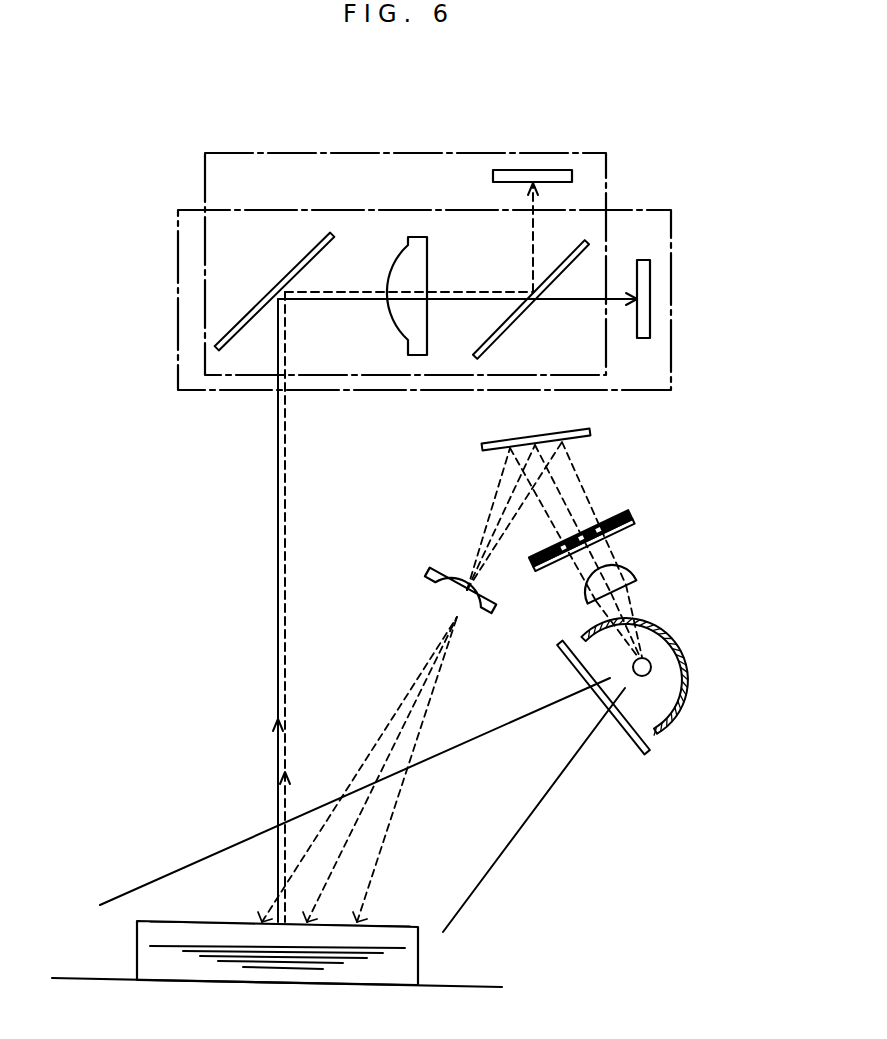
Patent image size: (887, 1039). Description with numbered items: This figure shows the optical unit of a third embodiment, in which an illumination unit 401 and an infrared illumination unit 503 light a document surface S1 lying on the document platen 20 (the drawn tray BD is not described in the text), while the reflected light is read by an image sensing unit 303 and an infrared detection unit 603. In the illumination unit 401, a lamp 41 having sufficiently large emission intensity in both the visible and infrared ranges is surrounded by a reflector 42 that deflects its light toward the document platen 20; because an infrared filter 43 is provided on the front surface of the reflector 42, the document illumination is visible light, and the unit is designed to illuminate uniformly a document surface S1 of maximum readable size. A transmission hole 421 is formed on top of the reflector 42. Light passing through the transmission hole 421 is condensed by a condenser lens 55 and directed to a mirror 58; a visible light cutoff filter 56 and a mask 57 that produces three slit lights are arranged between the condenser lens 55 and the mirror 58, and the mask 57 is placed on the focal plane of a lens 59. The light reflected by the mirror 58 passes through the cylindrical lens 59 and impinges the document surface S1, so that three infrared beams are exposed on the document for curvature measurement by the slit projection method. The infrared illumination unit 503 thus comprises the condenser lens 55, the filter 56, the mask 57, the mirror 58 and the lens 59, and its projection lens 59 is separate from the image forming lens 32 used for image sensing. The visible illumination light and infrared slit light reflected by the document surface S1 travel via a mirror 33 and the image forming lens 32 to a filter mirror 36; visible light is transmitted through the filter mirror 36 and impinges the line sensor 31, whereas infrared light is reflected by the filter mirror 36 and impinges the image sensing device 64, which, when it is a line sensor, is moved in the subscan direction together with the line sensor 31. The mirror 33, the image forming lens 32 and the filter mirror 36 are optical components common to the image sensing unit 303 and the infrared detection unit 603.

The infrared detection unit 603 is at (243, 153).
The image sensing unit 303 is at (657, 210).
The mirror 33 is at (305, 245).
The image forming lens 32 is at (418, 238).
The image sensing device 64 is at (512, 170).
The filter mirror 36 is at (492, 352).
The line sensor 31 is at (651, 318).
The infrared illumination unit 503 is at (456, 522).
The mirror 58 is at (592, 433).
The mask 57 is at (623, 516).
The visible light cutoff filter 56 is at (638, 524).
The condenser lens 55 is at (634, 573).
The lens 59 is at (428, 575).
The illumination unit 401 is at (681, 740).
The reflector 42 is at (683, 700).
The transmission hole 421 is at (641, 620).
The lamp 41 is at (652, 665).
The infrared filter 43 is at (636, 744).
The dish BD is at (137, 945).
The document surface S1 is at (225, 922).
The document platen 20 is at (485, 987).